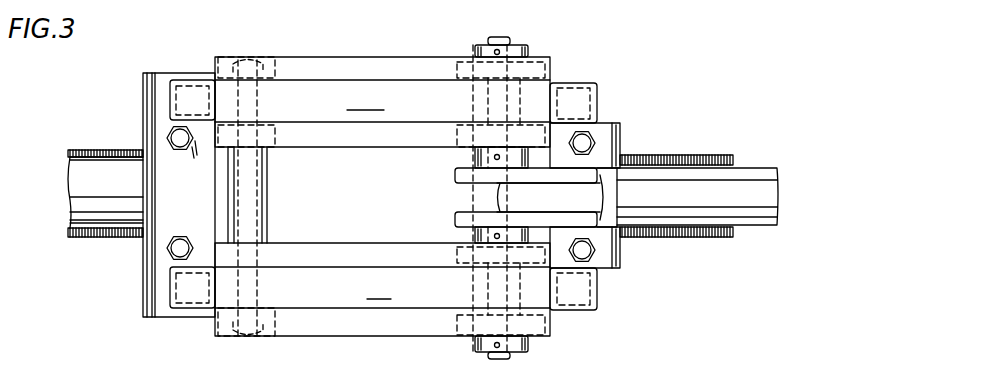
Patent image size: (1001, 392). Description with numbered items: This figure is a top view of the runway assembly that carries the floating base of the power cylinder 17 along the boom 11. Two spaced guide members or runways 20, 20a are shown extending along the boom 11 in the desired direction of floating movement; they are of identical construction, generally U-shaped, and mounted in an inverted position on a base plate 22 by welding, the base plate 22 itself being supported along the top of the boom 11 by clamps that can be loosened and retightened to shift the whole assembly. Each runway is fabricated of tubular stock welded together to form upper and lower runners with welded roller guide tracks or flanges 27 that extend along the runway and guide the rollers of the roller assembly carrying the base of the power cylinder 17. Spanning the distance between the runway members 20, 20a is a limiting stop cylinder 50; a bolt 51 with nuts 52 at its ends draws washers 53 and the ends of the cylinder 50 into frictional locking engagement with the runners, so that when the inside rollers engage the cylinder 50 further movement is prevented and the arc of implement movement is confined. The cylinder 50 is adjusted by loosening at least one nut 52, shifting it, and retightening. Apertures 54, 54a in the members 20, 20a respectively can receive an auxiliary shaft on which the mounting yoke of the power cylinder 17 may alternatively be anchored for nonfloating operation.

The boom 11 is at (117, 223).
The power cylinder 17 is at (754, 182).
The runway 20 is at (382, 287).
The runway 20a is at (382, 101).
The base plate 22 is at (150, 166).
The upper roller guide flange 27 is at (320, 58).
The limiting stop cylinder 50 is at (228, 206).
The bolt 51 is at (268, 196).
The nut 52 is at (260, 62).
The washer 53 is at (228, 58).
The aperture 54 is at (572, 312).
The aperture 54a is at (568, 86).